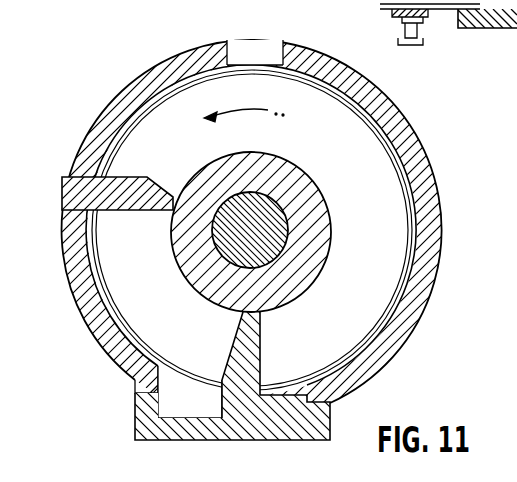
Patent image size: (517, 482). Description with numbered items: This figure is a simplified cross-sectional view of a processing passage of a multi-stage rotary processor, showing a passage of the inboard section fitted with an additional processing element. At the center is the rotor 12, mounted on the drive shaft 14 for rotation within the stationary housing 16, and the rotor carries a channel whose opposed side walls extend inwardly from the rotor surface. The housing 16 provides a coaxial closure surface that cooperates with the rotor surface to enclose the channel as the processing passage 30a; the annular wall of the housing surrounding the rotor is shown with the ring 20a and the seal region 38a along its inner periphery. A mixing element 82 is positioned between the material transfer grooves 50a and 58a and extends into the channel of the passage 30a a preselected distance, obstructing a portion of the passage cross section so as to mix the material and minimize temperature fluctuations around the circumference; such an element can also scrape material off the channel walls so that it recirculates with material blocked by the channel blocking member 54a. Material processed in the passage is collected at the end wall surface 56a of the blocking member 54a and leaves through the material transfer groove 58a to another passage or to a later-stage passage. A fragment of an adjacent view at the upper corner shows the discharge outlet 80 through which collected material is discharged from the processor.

The rotor 12 is at (304, 278).
The drive shaft 14 is at (278, 223).
The housing 16 is at (97, 123).
The housing ring wall 20a is at (112, 348).
The processing passage 30a is at (165, 288).
The seal slot 38a is at (112, 322).
The material transfer groove 50a is at (260, 44).
The channel blocking member 54a is at (241, 383).
The end wall surface 56a is at (236, 360).
The material transfer groove 58a is at (185, 408).
The outlet 80 is at (483, 28).
The mixing element 82 is at (67, 177).